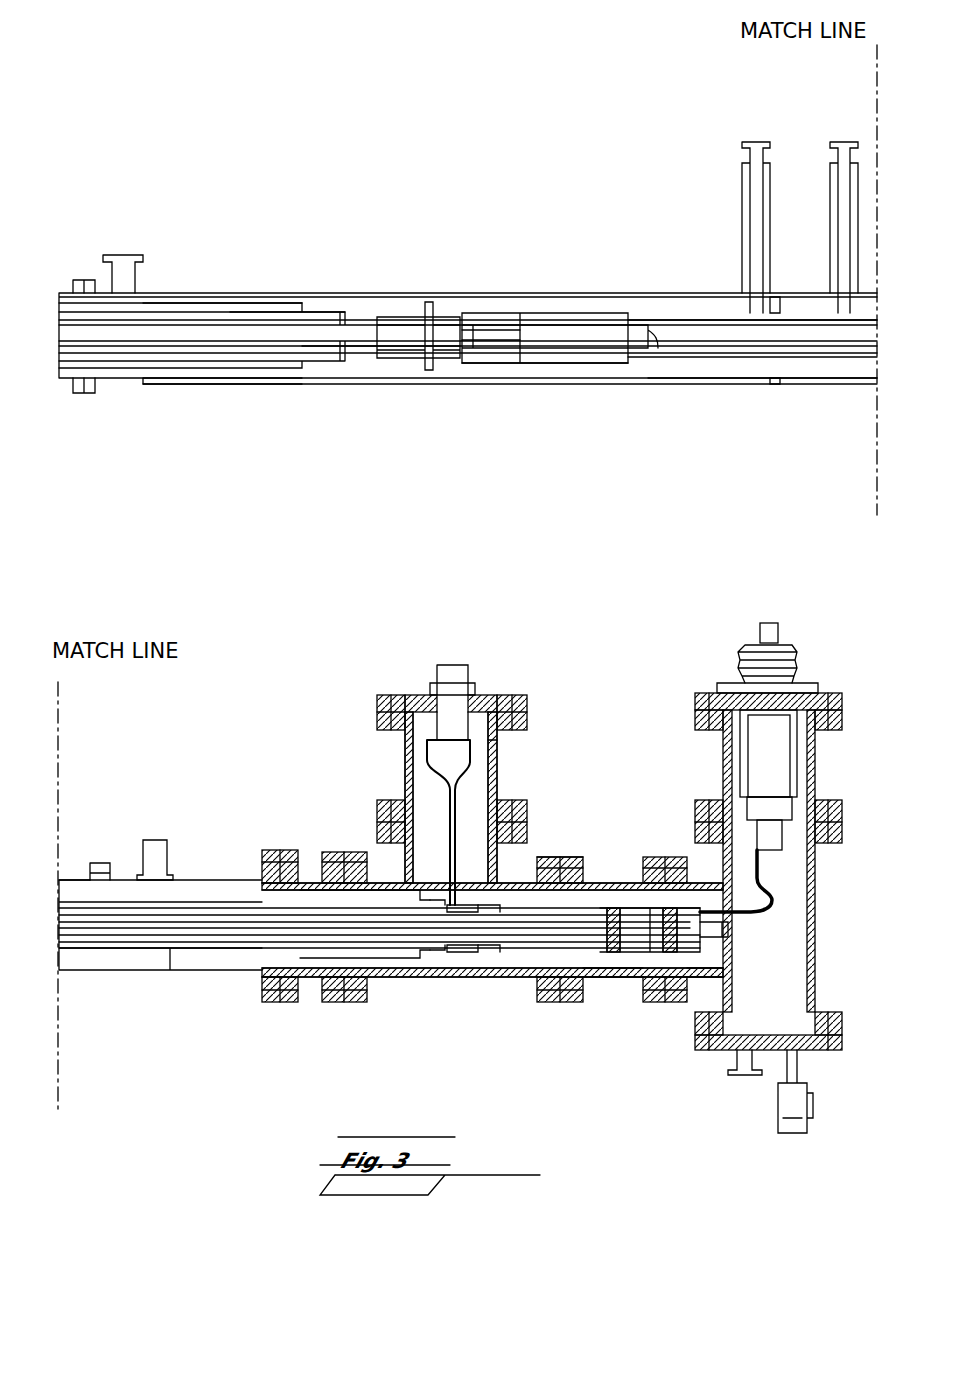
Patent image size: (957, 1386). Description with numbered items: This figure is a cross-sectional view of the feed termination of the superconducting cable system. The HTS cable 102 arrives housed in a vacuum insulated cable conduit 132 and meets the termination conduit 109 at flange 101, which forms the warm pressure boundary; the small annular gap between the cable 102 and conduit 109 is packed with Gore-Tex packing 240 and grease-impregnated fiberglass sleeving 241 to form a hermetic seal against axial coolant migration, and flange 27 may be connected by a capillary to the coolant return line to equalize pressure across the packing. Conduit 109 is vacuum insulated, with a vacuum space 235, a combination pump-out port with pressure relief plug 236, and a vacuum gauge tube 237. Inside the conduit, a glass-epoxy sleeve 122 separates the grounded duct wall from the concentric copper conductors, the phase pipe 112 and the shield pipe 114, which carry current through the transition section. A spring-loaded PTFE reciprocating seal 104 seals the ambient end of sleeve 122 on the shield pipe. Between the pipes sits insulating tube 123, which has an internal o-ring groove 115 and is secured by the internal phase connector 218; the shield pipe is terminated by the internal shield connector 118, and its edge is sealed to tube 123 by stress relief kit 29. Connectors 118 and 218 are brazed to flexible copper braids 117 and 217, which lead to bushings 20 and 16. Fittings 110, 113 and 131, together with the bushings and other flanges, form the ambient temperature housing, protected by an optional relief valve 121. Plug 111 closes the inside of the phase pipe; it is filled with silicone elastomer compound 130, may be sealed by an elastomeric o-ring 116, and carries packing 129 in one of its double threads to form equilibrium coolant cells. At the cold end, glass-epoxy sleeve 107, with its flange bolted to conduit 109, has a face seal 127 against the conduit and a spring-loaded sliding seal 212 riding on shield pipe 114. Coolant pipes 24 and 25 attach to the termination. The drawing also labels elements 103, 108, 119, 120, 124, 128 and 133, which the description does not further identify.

The flange 101 is at (73, 280).
The flange 27 is at (120, 255).
The grease-impregnated fiberglass sleeving 241 is at (240, 293).
The Gore-Tex packing 240 is at (310, 293).
The HTS cable 102 is at (362, 300).
The sliding seal 212 is at (468, 313).
The G-10 sleeve 107 is at (574, 297).
The connector 108 is at (664, 330).
The vacuum insulated cable conduit 132 is at (265, 378).
The shaft 103 is at (395, 360).
The silicone elastomer compound 130 is at (632, 363).
The packing 129 is at (664, 384).
The face seal 127 is at (778, 384).
The coolant pipe 24 is at (755, 142).
The coolant pipe 25 is at (840, 142).
The termination conduit 109 is at (68, 970).
The G-10 sleeve 122 is at (170, 950).
The pump-out port with pressure relief plug 236 is at (93, 863).
The vacuum space 235 is at (68, 880).
The vacuum gauge tube 237 is at (160, 840).
The spool piece 110 is at (282, 852).
The reciprocating seal 104 is at (397, 977).
The shield pipe 114 is at (433, 950).
The phase pipe 112 is at (443, 955).
The internal shield connector 118 is at (465, 958).
The bushing 20 is at (442, 682).
The tee housing 124 is at (513, 697).
The housing wall 133 is at (498, 745).
The flexible copper braid 117 is at (448, 780).
The stress relief kit 29 is at (550, 857).
The fitting 113 is at (562, 857).
The insulating tube 123 is at (588, 977).
The internal phase connector 218 is at (690, 977).
The fitting 131 is at (585, 1005).
The internal o-ring groove 115 is at (620, 914).
The plug 111 is at (700, 906).
The elastomeric o-ring 116 is at (700, 912).
The bushing 16 is at (760, 635).
The housing 119 is at (832, 700).
The flexible copper braid 217 is at (778, 917).
The outlet port 128 is at (745, 1078).
The sensor 120 is at (842, 1050).
The relief valve 121 is at (810, 1138).